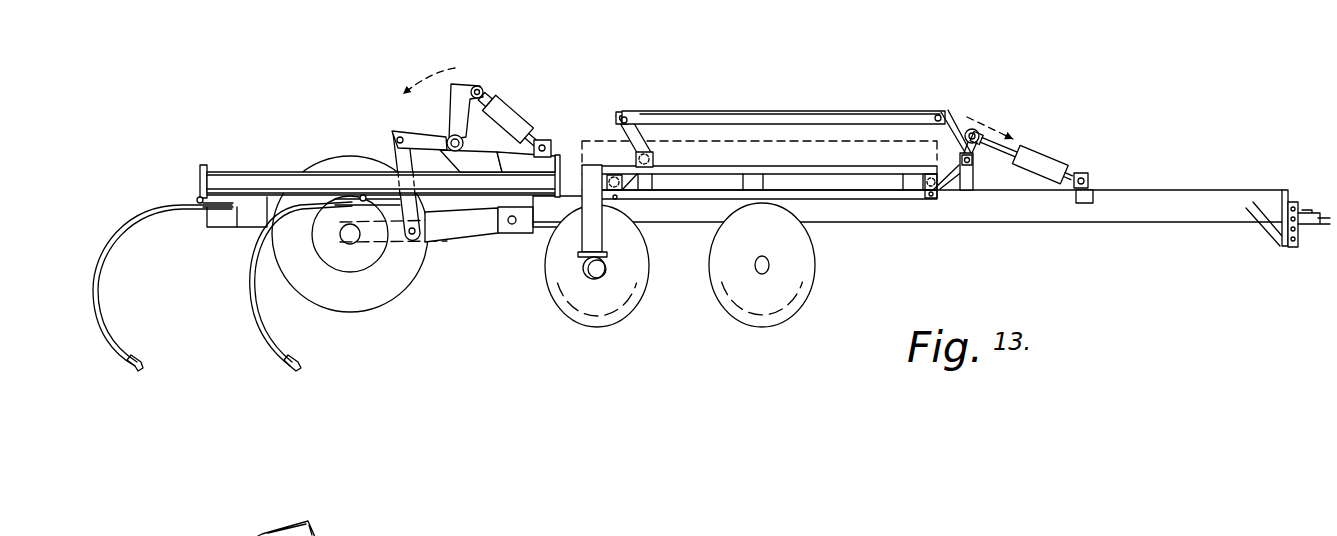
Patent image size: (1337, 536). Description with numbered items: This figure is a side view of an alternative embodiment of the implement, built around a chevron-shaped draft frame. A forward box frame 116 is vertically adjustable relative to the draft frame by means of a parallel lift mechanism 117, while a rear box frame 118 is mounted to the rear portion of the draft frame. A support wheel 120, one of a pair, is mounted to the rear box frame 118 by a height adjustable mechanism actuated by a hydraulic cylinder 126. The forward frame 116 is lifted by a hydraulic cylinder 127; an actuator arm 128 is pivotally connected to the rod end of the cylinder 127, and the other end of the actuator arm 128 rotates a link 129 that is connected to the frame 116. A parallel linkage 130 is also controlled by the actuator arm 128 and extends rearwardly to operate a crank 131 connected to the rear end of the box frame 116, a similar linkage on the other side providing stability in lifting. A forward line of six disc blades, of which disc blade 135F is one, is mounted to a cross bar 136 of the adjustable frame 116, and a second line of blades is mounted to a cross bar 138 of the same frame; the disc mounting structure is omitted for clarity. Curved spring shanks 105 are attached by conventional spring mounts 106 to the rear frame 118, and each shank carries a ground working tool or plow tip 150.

The spring tine 105 is at (120, 233).
The tine clamp bracket 106 is at (220, 214).
The forward box frame 116 is at (793, 163).
The parallel lift mechanism 117 is at (984, 112).
The rear box frame 118 is at (268, 169).
The support wheel 120 is at (378, 300).
The hydraulic cylinder 126 is at (522, 101).
The hydraulic cylinder 127 is at (1058, 162).
The actuator arm 128 is at (979, 146).
The link 129 is at (947, 175).
The parallel linkage 130 is at (865, 104).
The crank 131 is at (637, 142).
The disc blade 135F is at (763, 319).
The cross bar 136 is at (753, 178).
The cross bar 138 is at (593, 178).
The plow tip 150 is at (141, 353).